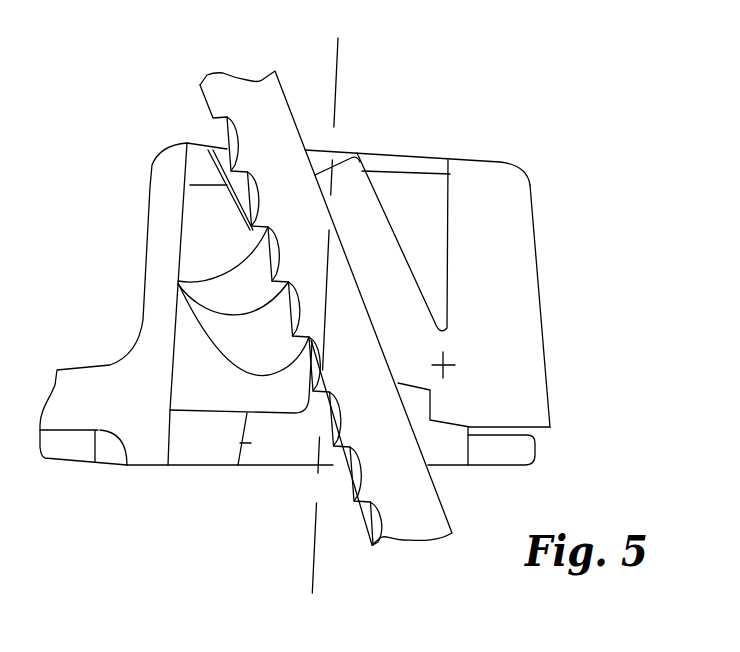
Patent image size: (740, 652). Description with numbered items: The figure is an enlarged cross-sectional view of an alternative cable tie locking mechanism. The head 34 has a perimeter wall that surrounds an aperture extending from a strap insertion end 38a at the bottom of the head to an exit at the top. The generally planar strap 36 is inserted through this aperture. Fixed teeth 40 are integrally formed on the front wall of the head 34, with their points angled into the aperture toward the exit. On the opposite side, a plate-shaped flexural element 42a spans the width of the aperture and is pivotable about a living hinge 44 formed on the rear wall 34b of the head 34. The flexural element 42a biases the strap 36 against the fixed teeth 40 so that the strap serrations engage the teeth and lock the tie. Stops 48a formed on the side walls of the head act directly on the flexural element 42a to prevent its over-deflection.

The head 34 is at (530, 395).
The rear wall 34b is at (527, 313).
The strap 36 is at (245, 97).
The strap insertion end 38a is at (282, 440).
The fixed teeth 40 is at (180, 290).
The flexural element 42a is at (380, 247).
The living hinge 44 is at (430, 372).
The stops 48a is at (373, 153).